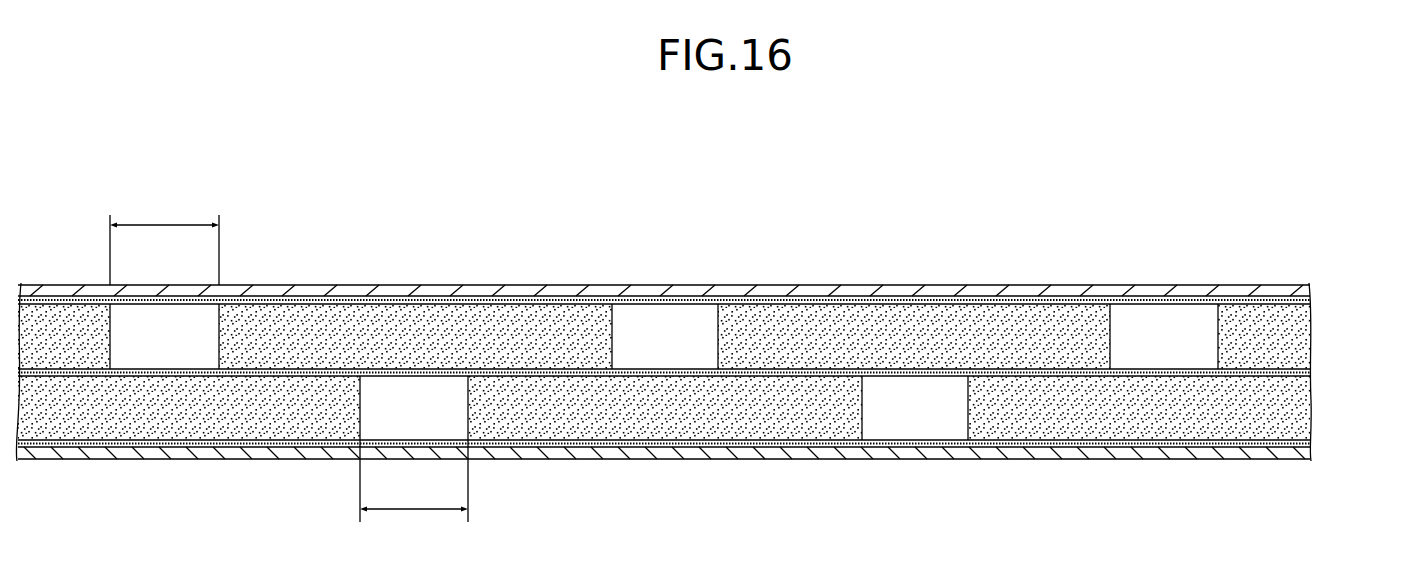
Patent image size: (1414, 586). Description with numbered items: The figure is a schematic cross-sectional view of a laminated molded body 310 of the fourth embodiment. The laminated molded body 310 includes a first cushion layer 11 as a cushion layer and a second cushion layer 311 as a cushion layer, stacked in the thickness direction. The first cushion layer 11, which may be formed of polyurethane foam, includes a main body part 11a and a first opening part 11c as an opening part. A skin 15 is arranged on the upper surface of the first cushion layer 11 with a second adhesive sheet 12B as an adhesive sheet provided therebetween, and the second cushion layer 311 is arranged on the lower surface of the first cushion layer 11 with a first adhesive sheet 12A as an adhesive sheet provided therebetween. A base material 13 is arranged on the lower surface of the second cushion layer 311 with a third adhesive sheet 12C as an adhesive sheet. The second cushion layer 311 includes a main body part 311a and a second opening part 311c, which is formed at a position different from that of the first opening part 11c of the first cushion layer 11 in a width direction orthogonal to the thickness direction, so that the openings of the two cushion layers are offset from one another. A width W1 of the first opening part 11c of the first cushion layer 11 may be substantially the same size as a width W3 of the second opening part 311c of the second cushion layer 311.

The laminated molded body 310 is at (697, 349).
The skin 15 is at (1247, 280).
The second adhesive sheet 12B is at (1267, 300).
The first cushion layer 11 is at (695, 295).
The main body part 11a is at (44, 318).
The first opening part 11c is at (120, 329).
The first adhesive sheet 12A is at (1261, 372).
The second cushion layer 311 is at (698, 377).
The main body part 311a is at (162, 412).
The second opening part 311c is at (370, 373).
The third adhesive sheet 12C is at (1263, 444).
The base material 13 is at (1260, 468).
The width of the first opening part W1 is at (164, 241).
The width of the second opening part W3 is at (414, 490).